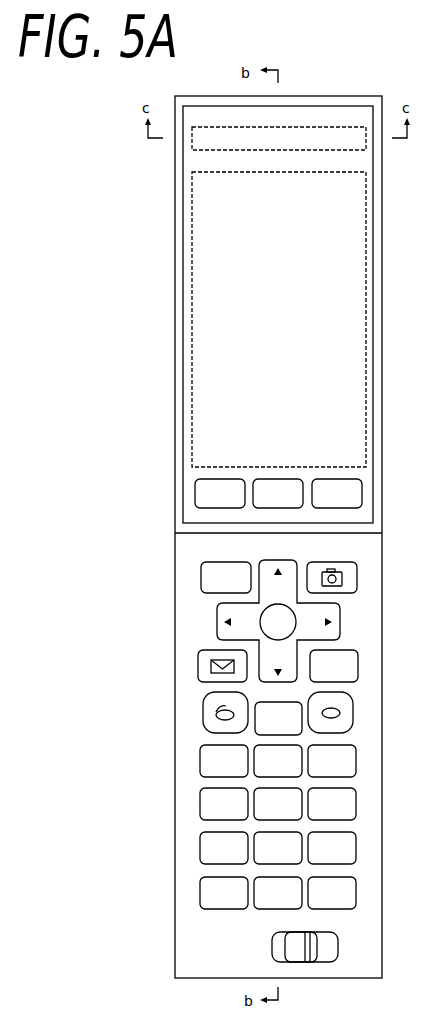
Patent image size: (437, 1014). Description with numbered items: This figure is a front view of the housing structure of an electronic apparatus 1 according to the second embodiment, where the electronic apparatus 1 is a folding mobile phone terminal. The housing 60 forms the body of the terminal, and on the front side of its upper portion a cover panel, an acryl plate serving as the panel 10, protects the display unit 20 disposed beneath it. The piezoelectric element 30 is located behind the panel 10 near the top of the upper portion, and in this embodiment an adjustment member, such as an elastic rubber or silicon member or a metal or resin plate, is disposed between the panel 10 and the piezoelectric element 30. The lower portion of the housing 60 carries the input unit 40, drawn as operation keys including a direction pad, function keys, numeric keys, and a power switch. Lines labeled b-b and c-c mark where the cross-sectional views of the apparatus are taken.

The electronic apparatus 1 is at (236, 88).
The panel 10 is at (296, 106).
The display unit 20 is at (366, 259).
The piezoelectric element 30 is at (366, 149).
The input unit 40 is at (343, 494).
The housing 60 is at (175, 230).